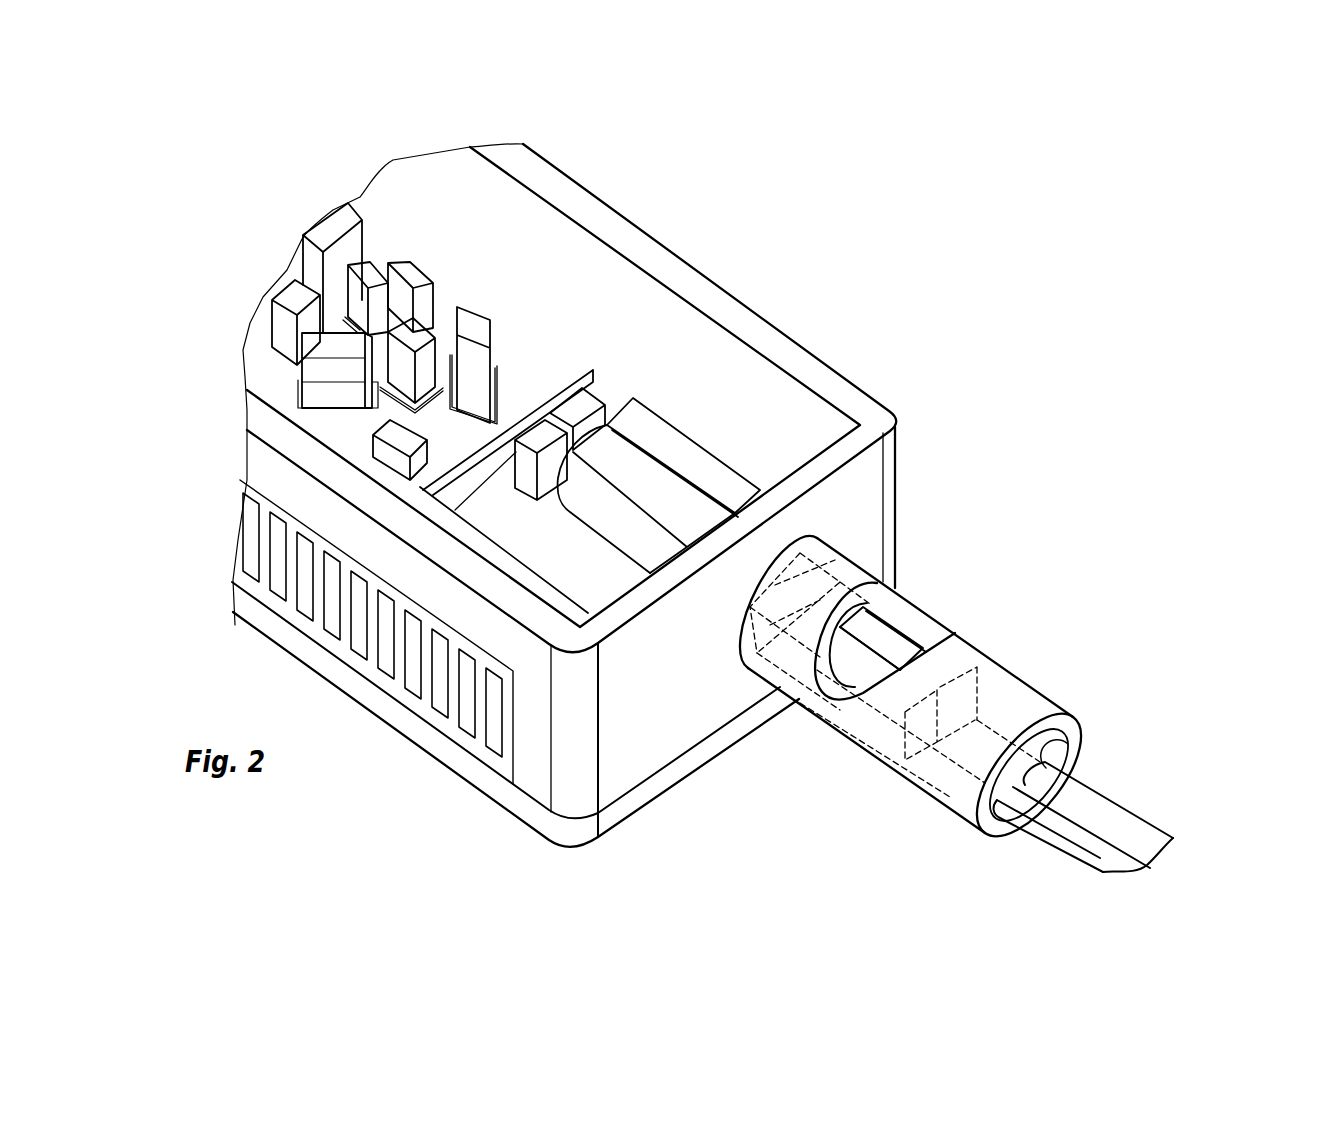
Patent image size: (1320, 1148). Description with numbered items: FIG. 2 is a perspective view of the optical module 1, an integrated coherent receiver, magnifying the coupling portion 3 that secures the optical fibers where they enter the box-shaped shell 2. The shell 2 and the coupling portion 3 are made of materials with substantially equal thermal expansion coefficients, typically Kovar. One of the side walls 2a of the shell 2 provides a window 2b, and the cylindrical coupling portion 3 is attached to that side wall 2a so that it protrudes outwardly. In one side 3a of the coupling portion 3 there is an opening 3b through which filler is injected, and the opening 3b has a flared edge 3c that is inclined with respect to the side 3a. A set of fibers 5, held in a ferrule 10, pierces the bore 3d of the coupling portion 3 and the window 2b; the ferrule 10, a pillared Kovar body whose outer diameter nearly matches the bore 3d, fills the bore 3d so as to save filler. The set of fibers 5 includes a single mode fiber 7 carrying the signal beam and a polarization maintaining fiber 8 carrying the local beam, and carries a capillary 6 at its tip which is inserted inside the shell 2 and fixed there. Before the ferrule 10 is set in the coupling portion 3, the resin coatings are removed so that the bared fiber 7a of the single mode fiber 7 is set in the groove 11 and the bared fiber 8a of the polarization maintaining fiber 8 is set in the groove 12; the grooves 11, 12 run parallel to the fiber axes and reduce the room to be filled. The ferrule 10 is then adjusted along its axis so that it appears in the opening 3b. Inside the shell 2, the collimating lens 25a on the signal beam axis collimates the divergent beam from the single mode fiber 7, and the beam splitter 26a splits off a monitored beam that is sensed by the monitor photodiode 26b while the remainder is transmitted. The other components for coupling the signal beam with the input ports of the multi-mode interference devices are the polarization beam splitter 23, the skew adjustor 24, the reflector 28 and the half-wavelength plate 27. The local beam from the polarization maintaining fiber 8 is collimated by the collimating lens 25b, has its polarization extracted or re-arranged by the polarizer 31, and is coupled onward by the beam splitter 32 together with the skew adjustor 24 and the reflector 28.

The optical module 1 is at (918, 250).
The shell 2 is at (826, 360).
The side wall 2a is at (868, 478).
The window 2b is at (835, 583).
The coupling portion 3 is at (998, 659).
The side 3a is at (967, 647).
The opening 3b is at (917, 615).
The flared edge 3c is at (927, 617).
The bore 3d is at (1060, 738).
The set of fibers 5 is at (1208, 780).
The capillary 6 is at (620, 460).
The single mode fiber 7 is at (1100, 797).
The bared fiber 7a is at (1013, 690).
The polarization maintaining fiber 8 is at (1103, 863).
The bared fiber 8a is at (935, 742).
The ferrule 10 is at (860, 655).
The groove 11 is at (947, 643).
The groove 12 is at (880, 673).
The polarization beam splitter 23 is at (413, 277).
The skew adjustor 24 is at (370, 275).
The collimating lens 25a is at (583, 395).
The collimating lens 25b is at (537, 440).
The beam splitter 26a is at (477, 325).
The monitor photodiode 26b is at (400, 435).
The half-wavelength plate 27 is at (295, 298).
The reflector 28 is at (320, 347).
The polarizer 31 is at (415, 335).
The beam splitter 32 is at (350, 247).